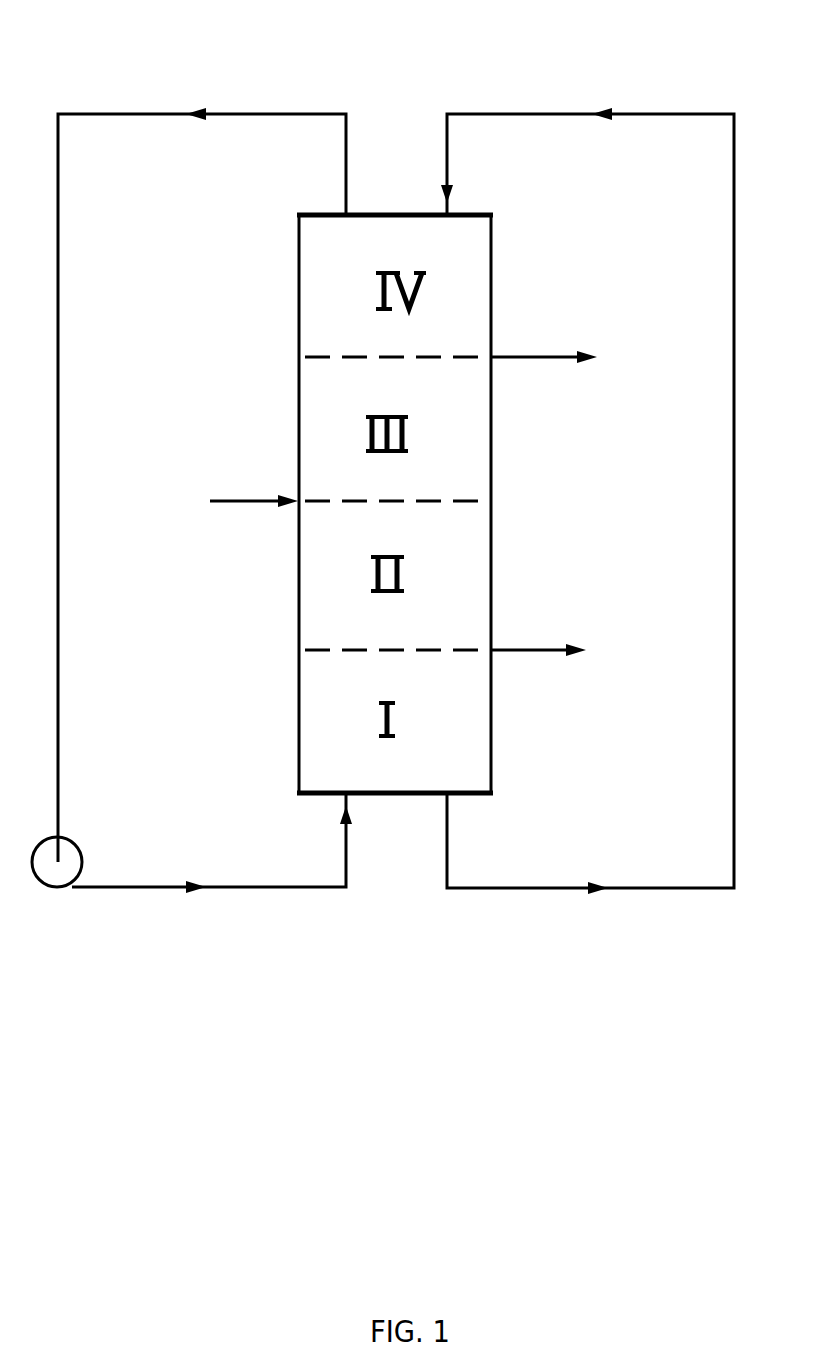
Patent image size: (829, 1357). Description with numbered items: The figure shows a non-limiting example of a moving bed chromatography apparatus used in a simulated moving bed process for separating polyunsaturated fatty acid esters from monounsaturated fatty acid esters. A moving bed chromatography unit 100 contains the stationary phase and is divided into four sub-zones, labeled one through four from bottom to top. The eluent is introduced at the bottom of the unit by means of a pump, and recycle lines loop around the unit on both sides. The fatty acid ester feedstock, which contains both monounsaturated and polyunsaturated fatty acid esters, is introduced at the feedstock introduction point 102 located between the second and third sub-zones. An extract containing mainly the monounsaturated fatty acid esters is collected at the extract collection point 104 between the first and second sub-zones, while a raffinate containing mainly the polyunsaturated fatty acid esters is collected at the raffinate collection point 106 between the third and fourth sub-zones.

The moving bed chromatography unit 100 is at (165, 35).
The feedstock introduction point 102 is at (213, 499).
The extract collection point 104 is at (577, 652).
The raffinate collection point 106 is at (578, 359).